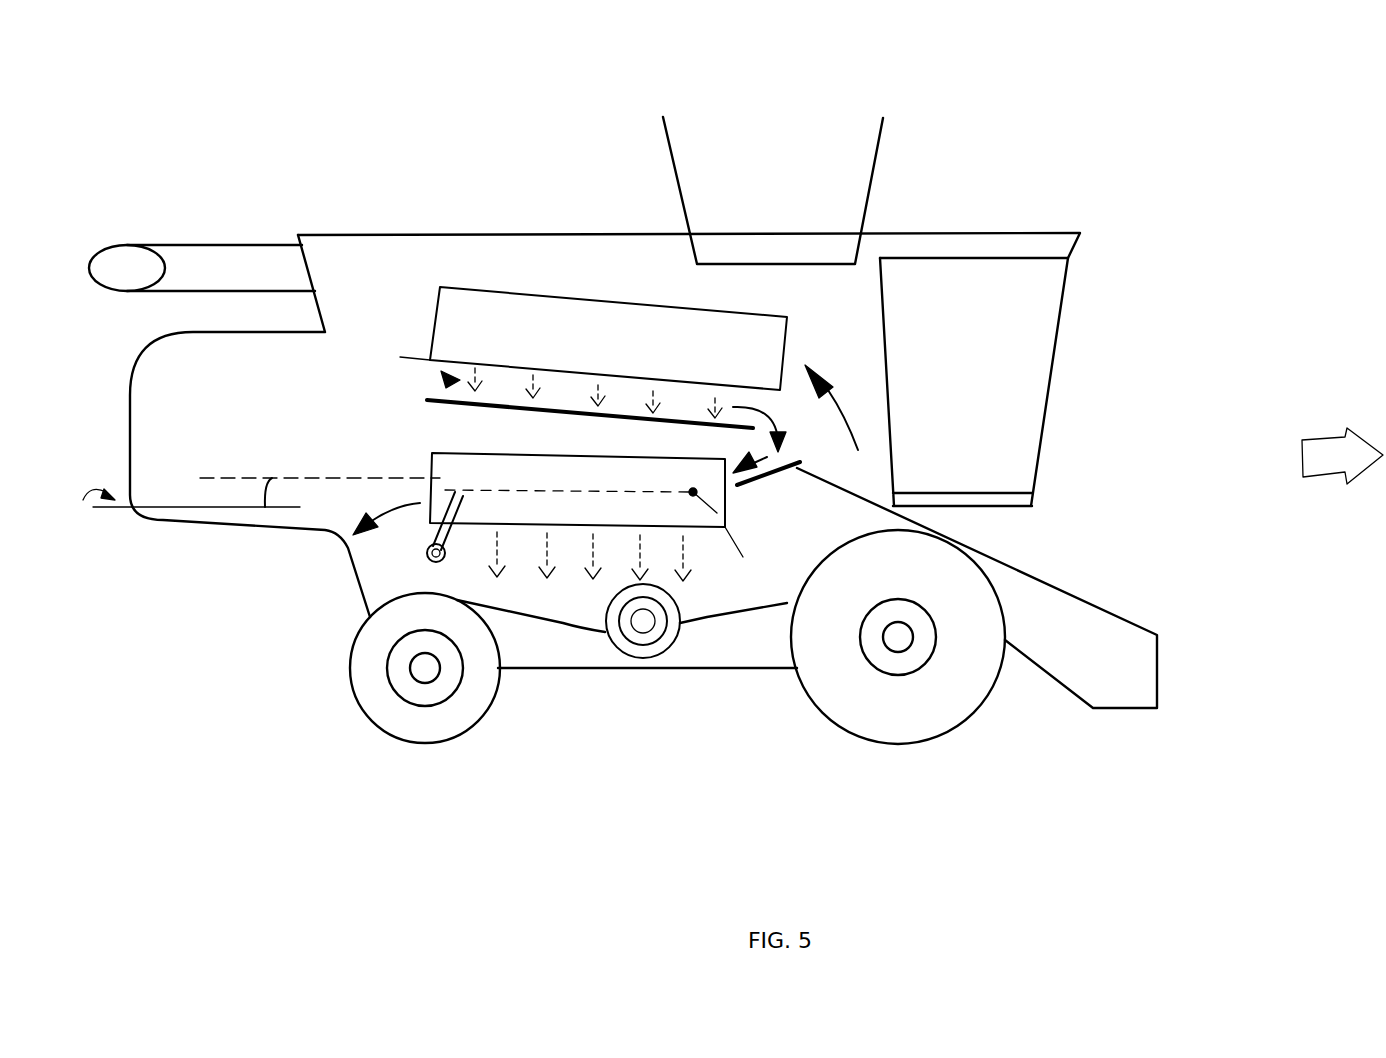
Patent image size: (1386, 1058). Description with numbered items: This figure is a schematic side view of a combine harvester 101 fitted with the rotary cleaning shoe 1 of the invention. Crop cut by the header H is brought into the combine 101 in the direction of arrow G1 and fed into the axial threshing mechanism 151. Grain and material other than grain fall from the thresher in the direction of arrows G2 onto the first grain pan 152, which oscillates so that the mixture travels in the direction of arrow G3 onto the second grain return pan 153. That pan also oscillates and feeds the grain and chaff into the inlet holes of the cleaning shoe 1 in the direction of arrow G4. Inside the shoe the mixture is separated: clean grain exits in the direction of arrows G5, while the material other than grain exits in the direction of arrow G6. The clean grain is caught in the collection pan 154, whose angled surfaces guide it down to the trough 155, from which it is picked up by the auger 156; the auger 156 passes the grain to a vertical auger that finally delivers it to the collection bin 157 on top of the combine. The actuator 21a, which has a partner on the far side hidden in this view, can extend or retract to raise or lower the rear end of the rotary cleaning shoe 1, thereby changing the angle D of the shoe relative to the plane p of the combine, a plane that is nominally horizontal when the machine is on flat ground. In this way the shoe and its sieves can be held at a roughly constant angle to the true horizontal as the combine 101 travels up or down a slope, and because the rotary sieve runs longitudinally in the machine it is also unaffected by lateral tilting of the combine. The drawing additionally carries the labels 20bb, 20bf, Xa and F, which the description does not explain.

The combine harvester 101 is at (1032, 164).
The collection bin 157 is at (883, 162).
The axial threshing mechanism 151 is at (575, 312).
The first grain pan 152 is at (492, 403).
The direction of grain and MOG falling from the thresher G2 is at (457, 483).
The lower body portion 20bb is at (440, 452).
The rotary cleaning shoe 1 is at (458, 487).
The axis Xa is at (227, 473).
The plane of the combine p is at (87, 504).
The angle of the shoe D is at (263, 492).
The direction of MOG exiting the cleaning shoe G6 is at (390, 520).
The actuator 21a is at (417, 550).
The collection pan 154 is at (570, 620).
The trough 155 is at (641, 660).
The auger 156 is at (675, 640).
The lower front body portion 20bf is at (745, 545).
The direction of clean grain exiting the cleaning shoe G5 is at (690, 548).
The second grain return pan 153 is at (893, 512).
The direction of feed into the cleaning shoe G4 is at (780, 470).
The direction of grain and MOG movement on the first grain pan G3 is at (790, 432).
The direction of crop intake G1 is at (852, 405).
The header H is at (1117, 653).
The forward travelling direction F is at (1319, 456).